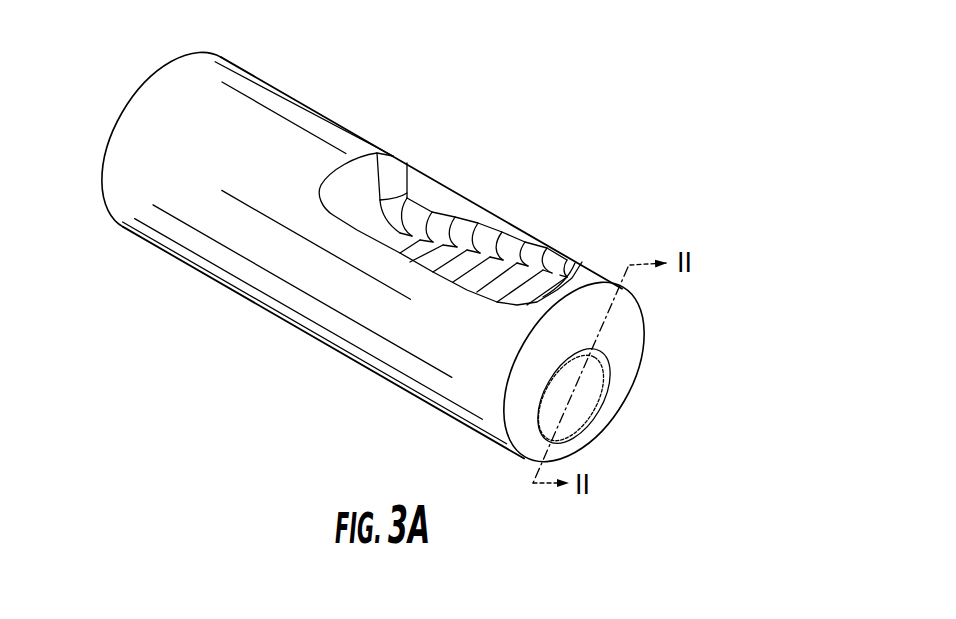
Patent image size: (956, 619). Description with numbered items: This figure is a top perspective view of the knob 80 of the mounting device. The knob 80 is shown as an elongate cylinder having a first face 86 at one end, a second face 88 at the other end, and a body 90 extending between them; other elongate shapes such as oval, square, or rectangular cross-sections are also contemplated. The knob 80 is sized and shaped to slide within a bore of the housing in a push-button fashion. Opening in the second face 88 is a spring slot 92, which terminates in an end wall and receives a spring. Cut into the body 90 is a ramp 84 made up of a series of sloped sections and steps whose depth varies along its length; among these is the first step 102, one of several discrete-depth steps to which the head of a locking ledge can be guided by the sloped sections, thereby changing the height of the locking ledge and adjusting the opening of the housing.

The knob 80 is at (600, 74).
The ramp 84 is at (426, 198).
The first face 86 is at (127, 110).
The second face 88 is at (548, 385).
The body 90 is at (197, 222).
The spring slot 92 is at (566, 392).
The first step 102 is at (398, 237).